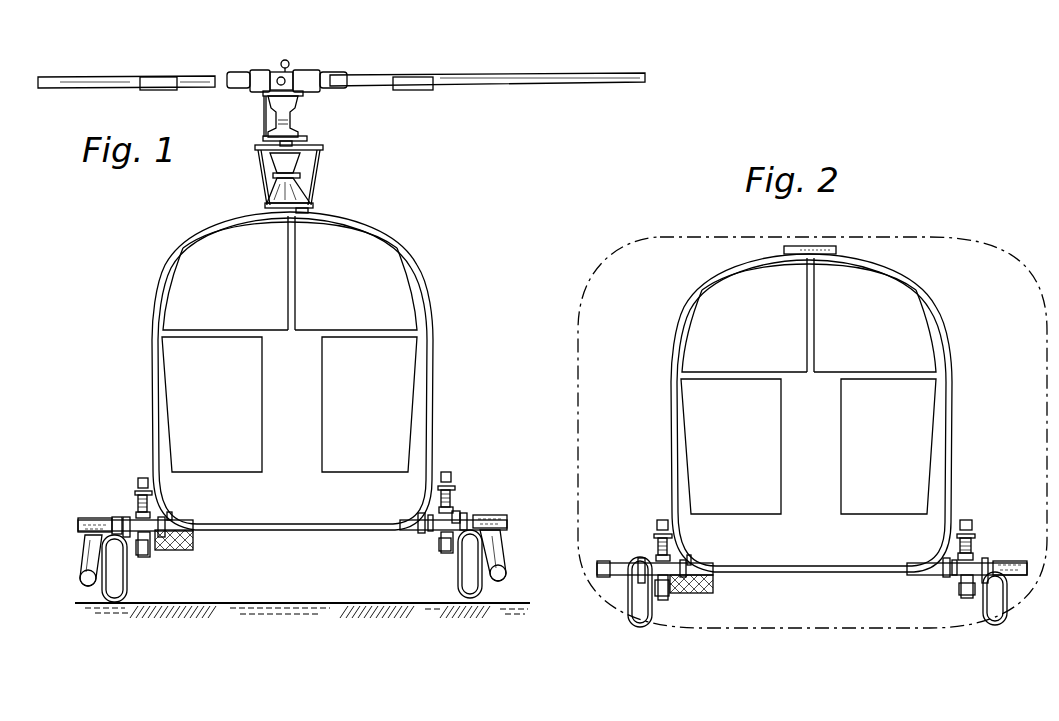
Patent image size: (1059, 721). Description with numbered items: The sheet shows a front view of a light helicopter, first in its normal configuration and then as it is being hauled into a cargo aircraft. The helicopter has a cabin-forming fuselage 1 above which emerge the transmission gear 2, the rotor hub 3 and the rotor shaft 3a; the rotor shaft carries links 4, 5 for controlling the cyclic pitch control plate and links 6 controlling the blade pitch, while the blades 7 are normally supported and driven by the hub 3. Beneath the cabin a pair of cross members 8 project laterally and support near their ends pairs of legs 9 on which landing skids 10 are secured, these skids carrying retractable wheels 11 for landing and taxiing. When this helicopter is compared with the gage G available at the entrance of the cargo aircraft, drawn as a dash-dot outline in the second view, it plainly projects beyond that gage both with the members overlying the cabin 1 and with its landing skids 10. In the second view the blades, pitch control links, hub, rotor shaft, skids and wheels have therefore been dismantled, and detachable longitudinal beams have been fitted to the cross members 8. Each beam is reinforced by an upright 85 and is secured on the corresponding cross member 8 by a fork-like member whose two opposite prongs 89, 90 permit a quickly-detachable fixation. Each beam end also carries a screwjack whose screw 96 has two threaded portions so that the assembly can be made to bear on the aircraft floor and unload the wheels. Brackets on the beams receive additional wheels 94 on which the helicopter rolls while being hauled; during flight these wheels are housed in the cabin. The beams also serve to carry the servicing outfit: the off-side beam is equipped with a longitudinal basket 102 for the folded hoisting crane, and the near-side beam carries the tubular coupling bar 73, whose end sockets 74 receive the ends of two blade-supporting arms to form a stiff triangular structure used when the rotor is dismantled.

In FIG. 1, the cabin-forming fuselage 1 is at (420, 332).
In FIG. 2, the cabin-forming fuselage 1 is at (940, 332).
In FIG. 1, the transmission gear 2 is at (298, 210).
In FIG. 2, the transmission gear 2 is at (815, 245).
In FIG. 1, the rotor hub 3 is at (294, 68).
In FIG. 1, the rotor shaft 3a is at (300, 168).
In FIG. 1, the cyclic pitch control link 4 is at (263, 183).
In FIG. 1, the cyclic pitch control link 5 is at (318, 188).
In FIG. 1, the blade pitch control link 6 is at (268, 111).
In FIG. 1, the rotor blade 7 is at (473, 83).
In FIG. 1, the cross member 8 is at (120, 518).
In FIG. 2, the cross member 8 is at (610, 562).
In FIG. 1, the leg 9 is at (86, 550).
In FIG. 1, the landing skid 10 is at (86, 581).
In FIG. 1, the retractable wheel 11 is at (118, 582).
In FIG. 1, the tubular coupling bar 73 is at (462, 510).
In FIG. 1, the socket 74 is at (458, 505).
In FIG. 1, the upright 85 is at (146, 478).
In FIG. 2, the upright 85 is at (663, 524).
In FIG. 1, the prong 89 is at (473, 515).
In FIG. 2, the prong 89 is at (1003, 565).
In FIG. 1, the prong 90 is at (420, 535).
In FIG. 2, the prong 90 is at (930, 577).
In FIG. 2, the additional wheel 94 is at (650, 617).
In FIG. 1, the screw 96 is at (150, 503).
In FIG. 2, the screw 96 is at (670, 547).
In FIG. 1, the longitudinal basket 102 is at (192, 547).
In FIG. 2, the longitudinal basket 102 is at (710, 590).
In FIG. 2, the gage G is at (637, 268).